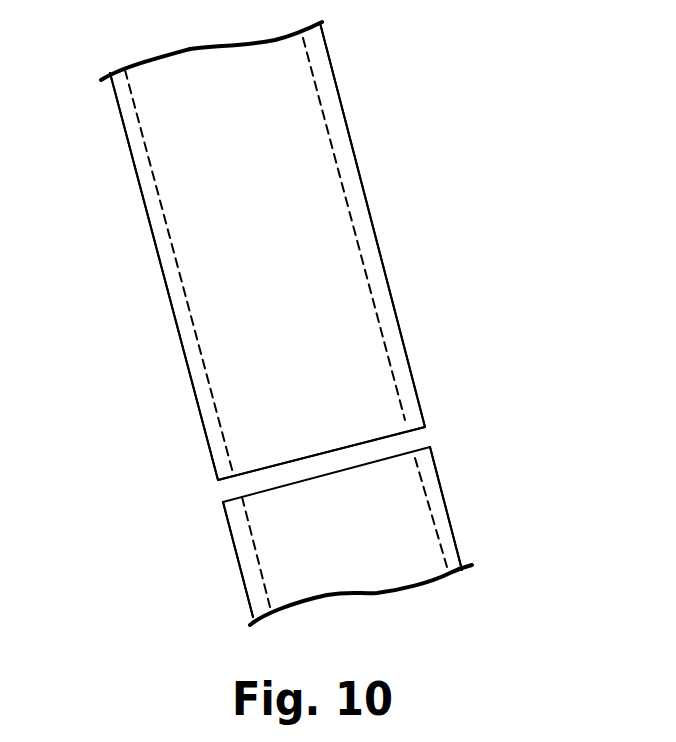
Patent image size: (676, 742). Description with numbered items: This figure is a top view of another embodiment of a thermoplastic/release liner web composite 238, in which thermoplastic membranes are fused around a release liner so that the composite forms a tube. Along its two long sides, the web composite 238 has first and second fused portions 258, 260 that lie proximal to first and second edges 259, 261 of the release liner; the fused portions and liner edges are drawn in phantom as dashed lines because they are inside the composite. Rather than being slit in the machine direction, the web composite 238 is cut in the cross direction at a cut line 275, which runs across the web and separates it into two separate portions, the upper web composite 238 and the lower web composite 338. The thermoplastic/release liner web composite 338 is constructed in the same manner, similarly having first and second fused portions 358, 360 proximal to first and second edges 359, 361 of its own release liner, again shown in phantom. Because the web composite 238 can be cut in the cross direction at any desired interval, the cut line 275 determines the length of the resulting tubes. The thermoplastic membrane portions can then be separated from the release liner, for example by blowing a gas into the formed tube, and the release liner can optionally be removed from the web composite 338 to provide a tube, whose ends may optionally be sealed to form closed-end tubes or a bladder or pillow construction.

The thermoplastic/release liner web composite 238 is at (290, 153).
The first fused portion 258 is at (165, 237).
The first edge 259 is at (151, 166).
The second fused portion 260 is at (355, 195).
The second edge 261 is at (333, 139).
The cut line 275 is at (361, 441).
The thermoplastic/release liner web composite 338 is at (382, 510).
The first fused portion 358 is at (250, 574).
The first edge 359 is at (247, 525).
The second fused portion 360 is at (453, 560).
The second edge 361 is at (436, 520).